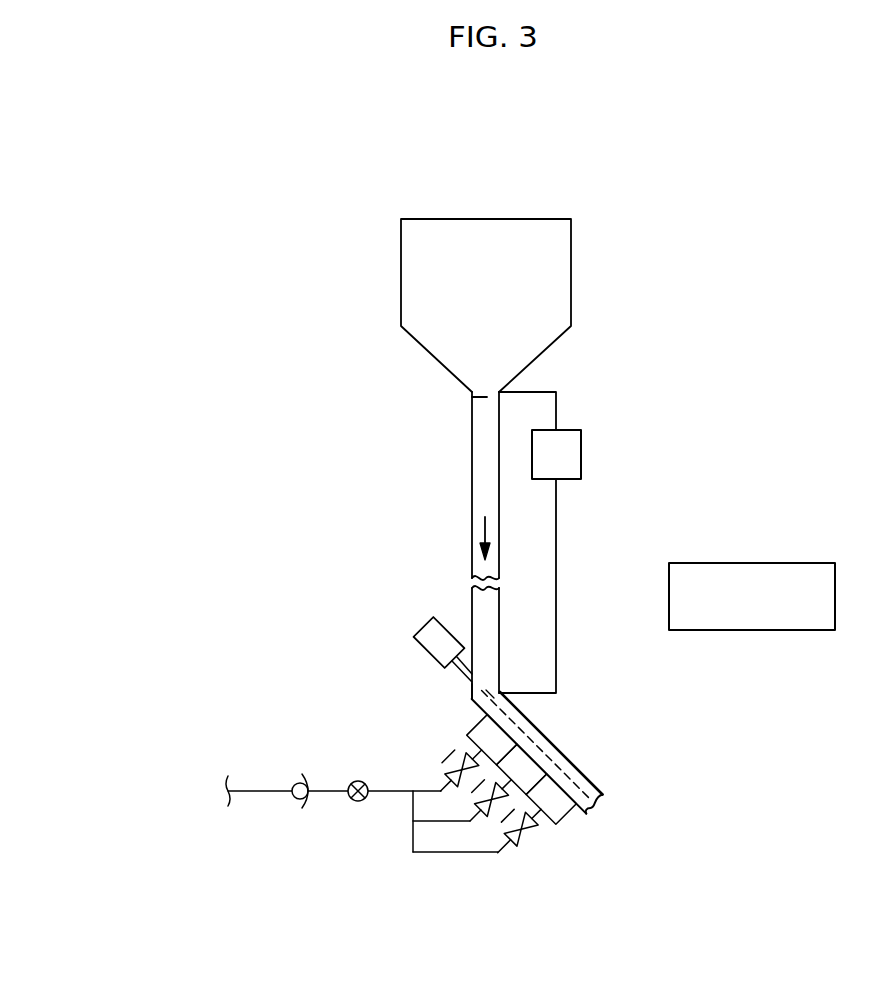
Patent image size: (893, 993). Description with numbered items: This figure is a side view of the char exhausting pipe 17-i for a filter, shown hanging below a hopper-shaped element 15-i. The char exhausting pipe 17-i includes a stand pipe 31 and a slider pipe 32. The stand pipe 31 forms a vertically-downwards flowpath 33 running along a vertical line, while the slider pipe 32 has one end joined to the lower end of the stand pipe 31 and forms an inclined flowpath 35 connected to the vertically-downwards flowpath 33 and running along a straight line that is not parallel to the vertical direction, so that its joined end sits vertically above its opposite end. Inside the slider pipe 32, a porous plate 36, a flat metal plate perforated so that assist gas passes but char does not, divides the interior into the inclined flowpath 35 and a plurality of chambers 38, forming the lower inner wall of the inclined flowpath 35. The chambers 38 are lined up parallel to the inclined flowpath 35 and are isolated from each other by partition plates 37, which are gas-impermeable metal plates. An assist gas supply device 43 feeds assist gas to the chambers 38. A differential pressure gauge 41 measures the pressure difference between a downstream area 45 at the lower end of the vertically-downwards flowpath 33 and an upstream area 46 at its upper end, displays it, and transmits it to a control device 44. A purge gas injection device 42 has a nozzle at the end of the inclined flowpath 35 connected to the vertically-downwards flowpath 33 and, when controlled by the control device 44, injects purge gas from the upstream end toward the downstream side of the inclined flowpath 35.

The hopper 15-i is at (571, 271).
The char exhausting pipe for a filter 17-i is at (244, 472).
The stand pipe 31 is at (472, 503).
The slider pipe 32 is at (590, 763).
The vertically-downwards flowpath 33 is at (480, 457).
The inclined flowpath 35 is at (553, 750).
The porous plate 36 is at (603, 790).
The partition plates 37 is at (470, 733).
The chambers 38 is at (470, 693).
The differential pressure gauge 41 is at (582, 452).
The purge gas injection device 42 is at (425, 622).
The assist gas supply device 43 is at (349, 871).
The control device 44 is at (752, 562).
The downstream area 45 is at (490, 693).
The upstream area 46 is at (472, 397).